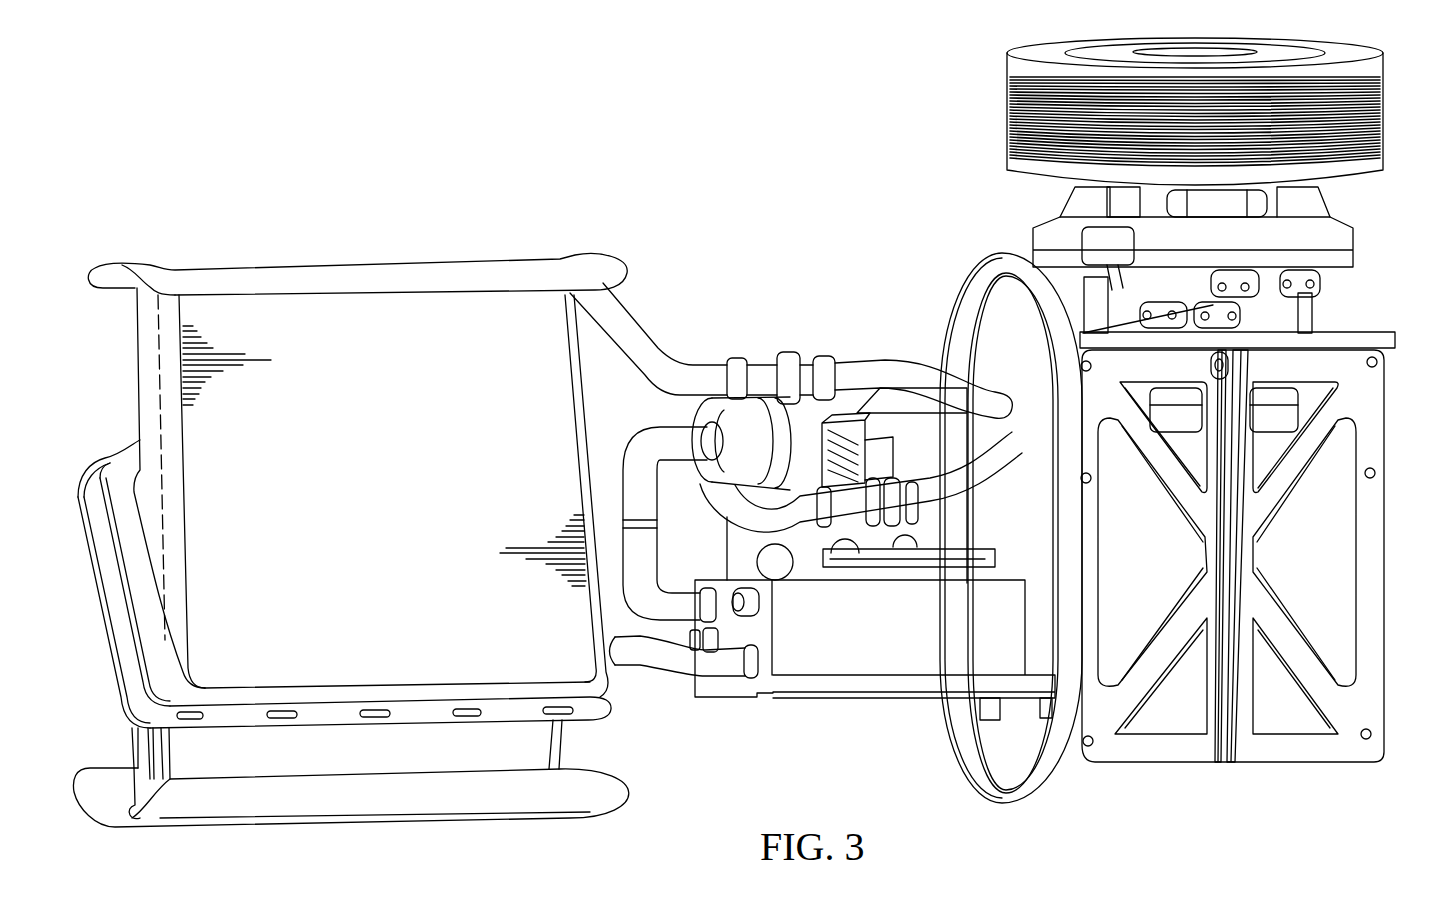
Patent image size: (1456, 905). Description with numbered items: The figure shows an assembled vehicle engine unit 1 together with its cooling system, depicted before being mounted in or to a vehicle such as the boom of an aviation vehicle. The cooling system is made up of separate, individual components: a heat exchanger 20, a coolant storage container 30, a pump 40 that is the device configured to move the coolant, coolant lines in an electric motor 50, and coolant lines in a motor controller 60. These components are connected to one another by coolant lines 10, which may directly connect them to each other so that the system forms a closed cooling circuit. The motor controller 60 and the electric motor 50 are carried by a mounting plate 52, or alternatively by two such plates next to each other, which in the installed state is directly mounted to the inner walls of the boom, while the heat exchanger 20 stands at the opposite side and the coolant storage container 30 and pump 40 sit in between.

The vehicle engine unit 1 is at (309, 120).
The coolant lines 10 is at (641, 324).
The heat exchanger 20 is at (137, 383).
The coolant storage container 30 is at (843, 657).
The pump 40 is at (700, 416).
The electric motor 50 is at (1383, 113).
The mounting plate 52 is at (1374, 642).
The motor controller 60 is at (1331, 548).